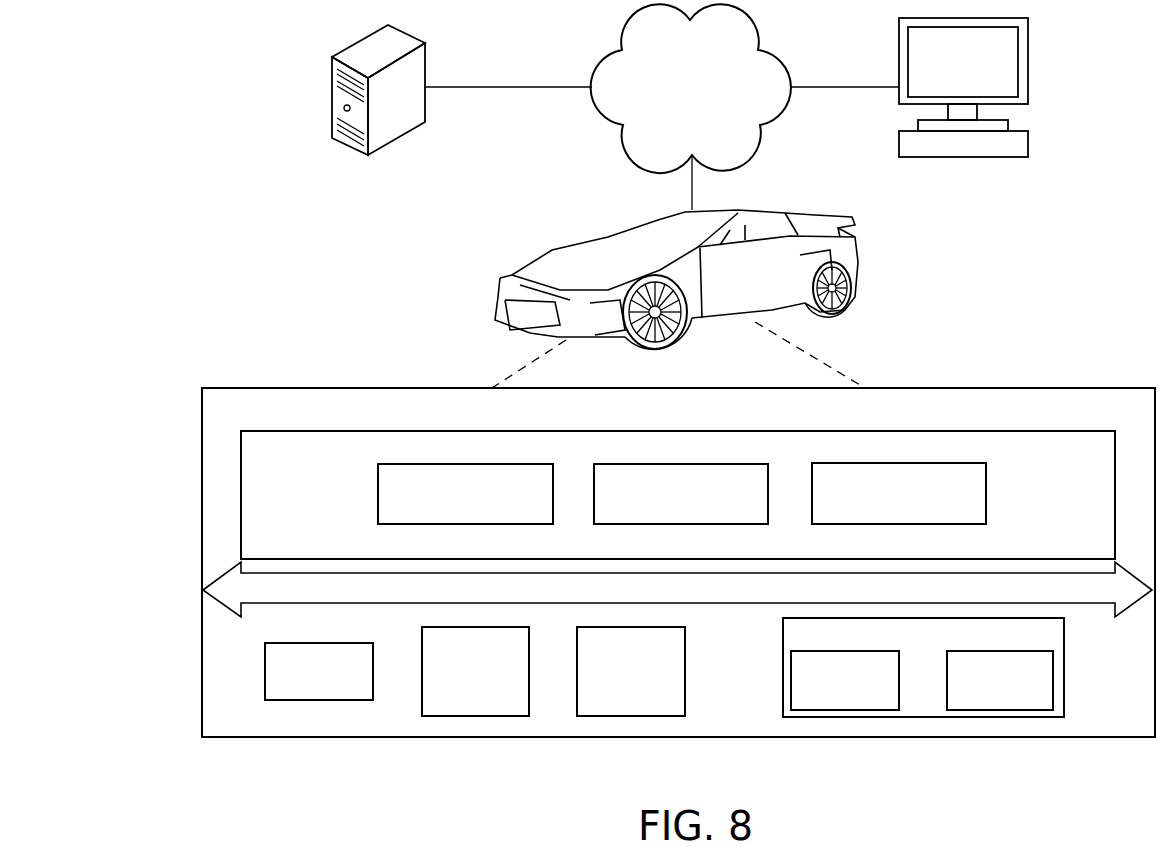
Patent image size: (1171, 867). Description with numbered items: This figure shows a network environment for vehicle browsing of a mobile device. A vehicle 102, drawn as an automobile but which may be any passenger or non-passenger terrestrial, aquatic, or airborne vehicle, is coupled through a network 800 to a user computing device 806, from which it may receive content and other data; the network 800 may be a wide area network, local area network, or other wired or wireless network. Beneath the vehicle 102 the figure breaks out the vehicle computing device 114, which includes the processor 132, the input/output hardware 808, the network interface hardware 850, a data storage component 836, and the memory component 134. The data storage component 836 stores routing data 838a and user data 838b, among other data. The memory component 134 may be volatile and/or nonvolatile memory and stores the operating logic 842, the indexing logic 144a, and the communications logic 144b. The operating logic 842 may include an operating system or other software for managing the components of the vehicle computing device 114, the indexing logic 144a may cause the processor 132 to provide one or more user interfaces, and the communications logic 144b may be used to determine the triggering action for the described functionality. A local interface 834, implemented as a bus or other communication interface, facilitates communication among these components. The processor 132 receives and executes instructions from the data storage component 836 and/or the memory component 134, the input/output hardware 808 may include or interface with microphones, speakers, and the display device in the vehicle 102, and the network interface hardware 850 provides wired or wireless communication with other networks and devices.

The network 800 is at (718, 105).
The user computing device 806 is at (331, 103).
The vehicle 102 is at (568, 248).
The vehicle computing device 114 is at (1043, 395).
The memory component 134 is at (826, 445).
The operating logic 842 is at (467, 464).
The indexing logic 144a is at (651, 464).
The communications logic 144b is at (935, 463).
The local interface 834 is at (1103, 603).
The processor 132 is at (322, 700).
The input/output hardware 808 is at (483, 716).
The network interface hardware 850 is at (633, 716).
The data storage component 836 is at (923, 717).
The routing data 838a is at (845, 710).
The user data 838b is at (1003, 710).